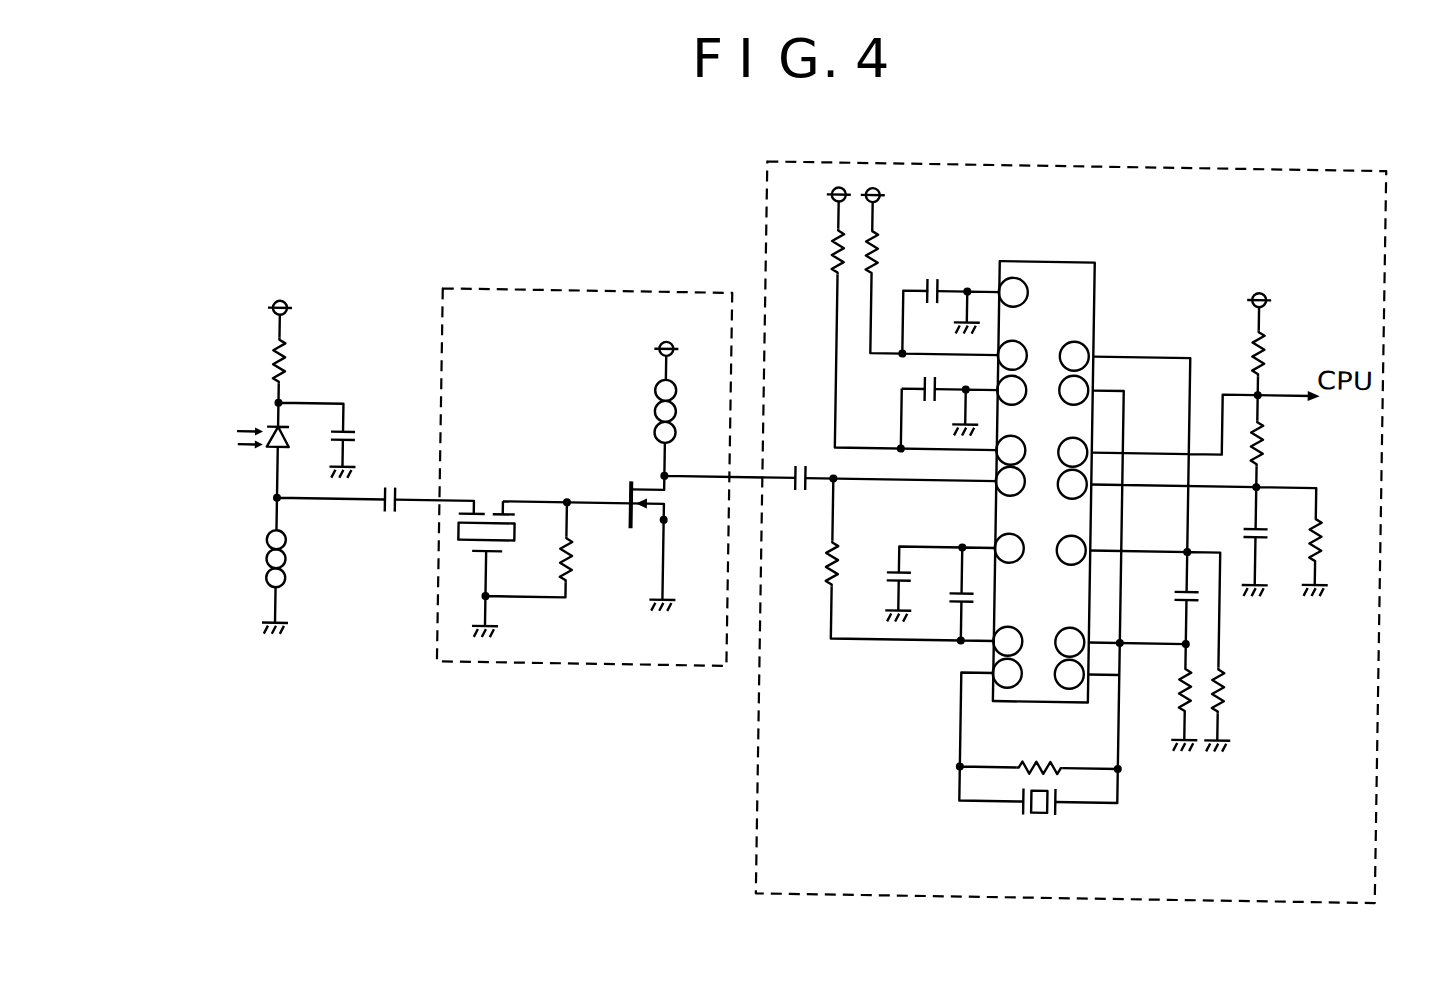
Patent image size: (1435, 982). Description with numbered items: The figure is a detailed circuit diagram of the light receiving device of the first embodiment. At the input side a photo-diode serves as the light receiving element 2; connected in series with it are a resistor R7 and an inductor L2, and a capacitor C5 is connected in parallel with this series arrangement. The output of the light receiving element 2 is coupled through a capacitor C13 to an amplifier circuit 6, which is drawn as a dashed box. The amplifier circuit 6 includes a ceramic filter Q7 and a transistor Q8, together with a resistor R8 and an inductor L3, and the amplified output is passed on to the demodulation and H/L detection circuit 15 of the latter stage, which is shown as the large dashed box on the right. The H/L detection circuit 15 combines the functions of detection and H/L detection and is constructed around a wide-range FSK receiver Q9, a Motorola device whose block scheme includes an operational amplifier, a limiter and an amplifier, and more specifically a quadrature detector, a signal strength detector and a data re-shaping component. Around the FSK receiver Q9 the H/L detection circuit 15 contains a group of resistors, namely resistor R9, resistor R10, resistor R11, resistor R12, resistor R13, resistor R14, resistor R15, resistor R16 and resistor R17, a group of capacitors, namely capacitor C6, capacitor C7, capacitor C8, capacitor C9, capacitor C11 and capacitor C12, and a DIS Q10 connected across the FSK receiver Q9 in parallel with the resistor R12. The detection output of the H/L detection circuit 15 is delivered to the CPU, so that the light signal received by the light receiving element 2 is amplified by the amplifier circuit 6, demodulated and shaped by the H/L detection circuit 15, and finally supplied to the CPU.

The light receiving element 2 is at (268, 434).
The amplifier circuit 6 is at (546, 292).
The H/L detection circuit 15 is at (1077, 160).
The resistor R7 is at (283, 375).
The capacitor C5 is at (357, 443).
The inductor L2 is at (295, 574).
The capacitor C13 is at (390, 521).
The ceramic filter Q7 is at (493, 504).
The resistor R8 is at (575, 565).
The transistor Q8 is at (669, 509).
The inductor L3 is at (675, 425).
The resistor R9 is at (828, 249).
The resistor R11 is at (876, 251).
The capacitor C7 is at (933, 279).
The capacitor C8 is at (932, 387).
The capacitor C6 is at (801, 469).
The resistor R10 is at (827, 558).
The capacitor C9 is at (889, 567).
The wide-range FSK receiver Q9 is at (1094, 288).
The resistor R15 is at (1261, 347).
The resistor R16 is at (1265, 444).
The resistor R17 is at (1328, 545).
The capacitor C11 is at (1242, 529).
The capacitor C12 is at (1178, 589).
The resistor R13 is at (1180, 697).
The resistor R14 is at (1228, 700).
The resistor R12 is at (1046, 757).
The DIS Q10 is at (1047, 813).